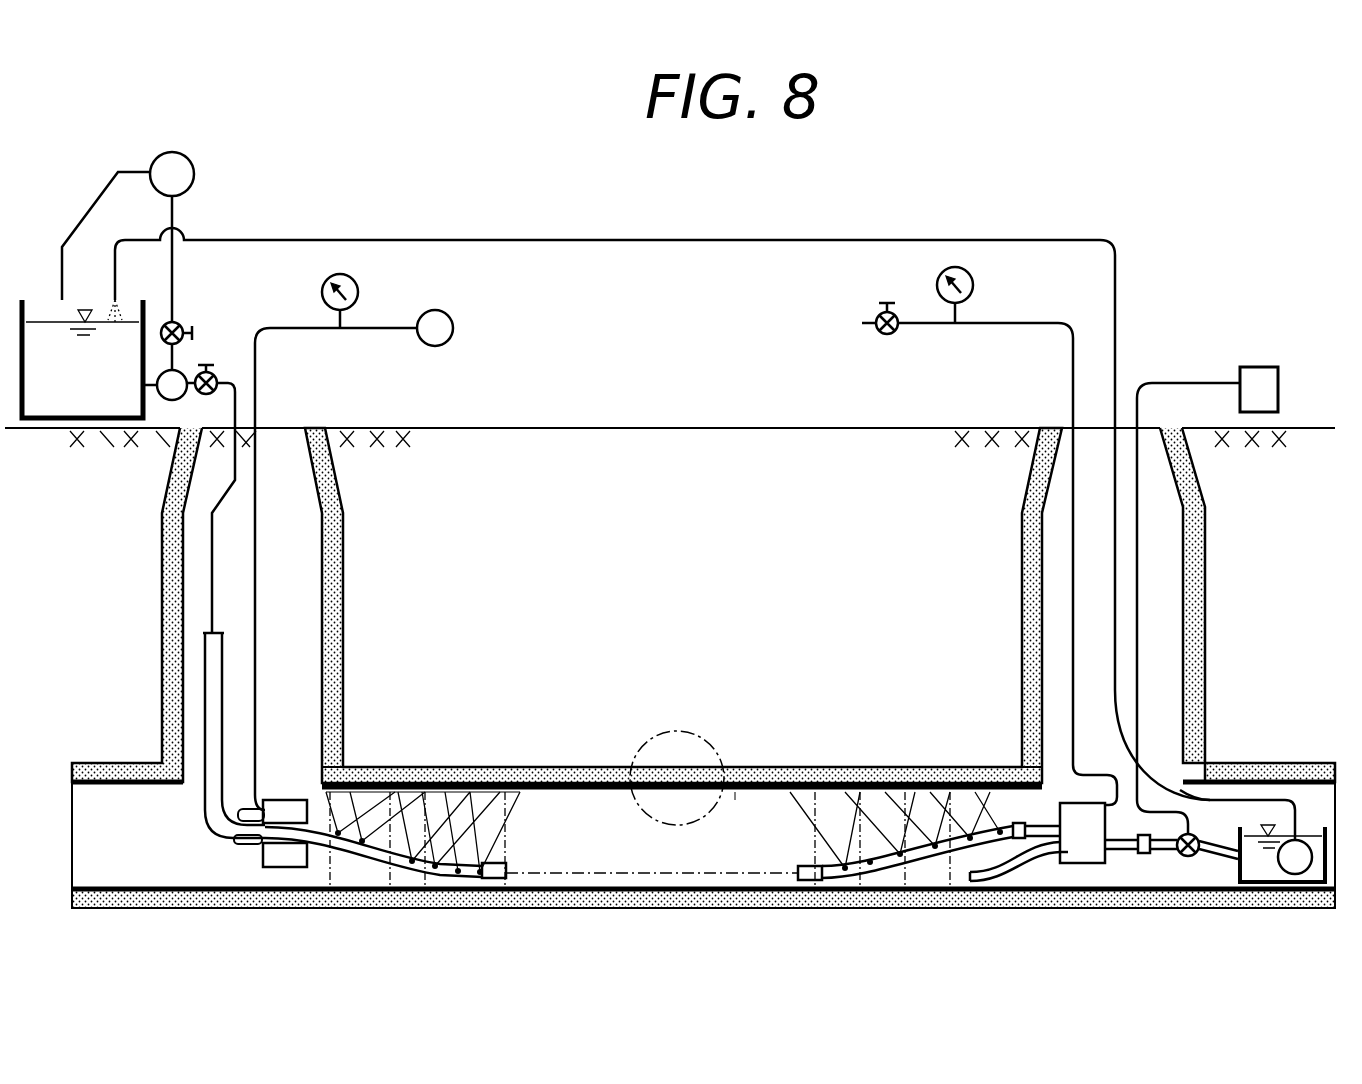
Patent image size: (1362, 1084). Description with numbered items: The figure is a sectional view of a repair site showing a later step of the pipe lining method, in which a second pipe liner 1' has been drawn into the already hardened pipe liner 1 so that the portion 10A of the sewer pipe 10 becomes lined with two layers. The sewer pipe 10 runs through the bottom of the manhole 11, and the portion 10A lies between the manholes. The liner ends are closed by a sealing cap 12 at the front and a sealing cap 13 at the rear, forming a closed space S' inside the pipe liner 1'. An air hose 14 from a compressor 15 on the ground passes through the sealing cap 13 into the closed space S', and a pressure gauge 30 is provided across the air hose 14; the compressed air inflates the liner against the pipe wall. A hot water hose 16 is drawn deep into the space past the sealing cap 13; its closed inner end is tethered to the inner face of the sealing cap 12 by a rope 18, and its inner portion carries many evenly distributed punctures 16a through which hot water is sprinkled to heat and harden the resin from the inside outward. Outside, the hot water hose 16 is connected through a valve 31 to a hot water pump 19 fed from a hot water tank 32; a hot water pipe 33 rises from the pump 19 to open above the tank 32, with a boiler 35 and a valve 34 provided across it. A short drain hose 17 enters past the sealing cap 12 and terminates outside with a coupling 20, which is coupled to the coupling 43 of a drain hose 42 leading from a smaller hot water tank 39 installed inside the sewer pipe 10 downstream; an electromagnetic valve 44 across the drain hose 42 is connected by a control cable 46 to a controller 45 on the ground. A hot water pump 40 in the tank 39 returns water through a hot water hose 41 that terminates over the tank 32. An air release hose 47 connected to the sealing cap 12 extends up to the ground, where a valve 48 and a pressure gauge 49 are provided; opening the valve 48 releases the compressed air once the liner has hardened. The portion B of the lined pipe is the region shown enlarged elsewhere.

The pipe liner 1 is at (450, 743).
The pipe liner 1' is at (737, 821).
The sewer pipe 10 is at (655, 912).
The portion of the sewer pipe 10A is at (803, 766).
The manhole 11 is at (300, 598).
The sealing cap 12 is at (1062, 904).
The sealing cap 13 is at (300, 800).
The air hose 14 is at (255, 410).
The compressor 15 is at (453, 328).
The hot water hose 16 is at (822, 904).
The punctures 16a is at (482, 862).
The drain hose 17 is at (1002, 904).
The rope 18 is at (1003, 766).
The hot water pump 19 is at (172, 400).
The coupling 20 is at (1110, 904).
The pressure gauge 30 is at (358, 298).
The valve 31 is at (214, 362).
The hot water tank 32 is at (30, 300).
The hot water pipe 33 is at (175, 228).
The valve 34 is at (177, 320).
The boiler 35 is at (194, 172).
The hot water tank 39 is at (1330, 830).
The hot water pump 40 is at (1285, 904).
The hot water hose 41 is at (597, 238).
The drain hose 42 is at (1220, 835).
The coupling 43 is at (1148, 904).
The electromagnetic valve 44 is at (1200, 904).
The controller 45 is at (1258, 367).
The control cable 46 is at (1173, 383).
The air release hose 47 is at (1073, 372).
The valve 48 is at (887, 336).
The pressure gauge 49 is at (973, 292).
The portion B is at (690, 742).
The space S' is at (623, 834).